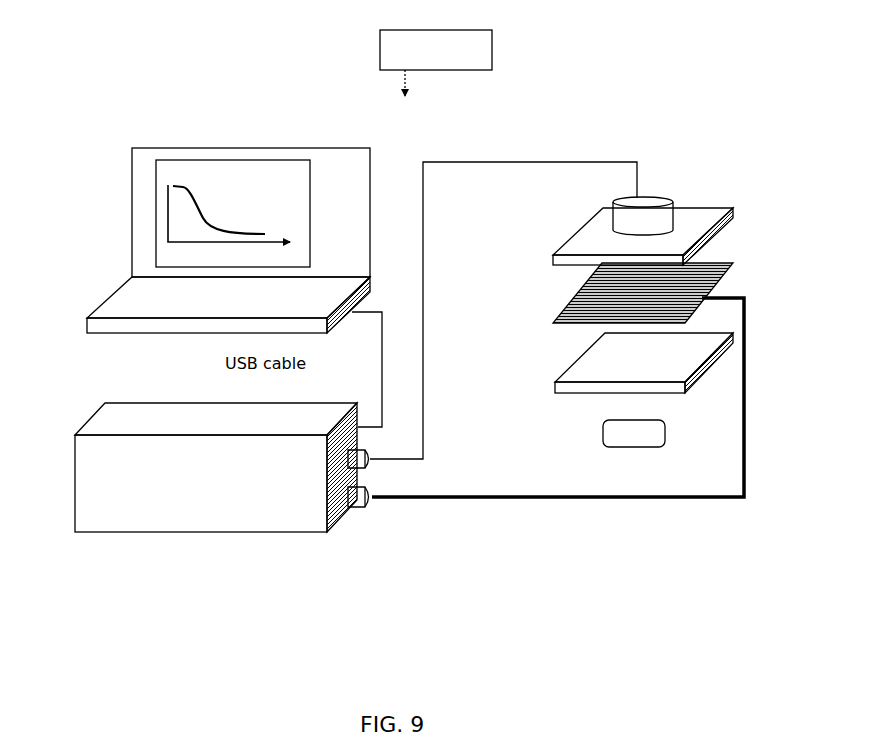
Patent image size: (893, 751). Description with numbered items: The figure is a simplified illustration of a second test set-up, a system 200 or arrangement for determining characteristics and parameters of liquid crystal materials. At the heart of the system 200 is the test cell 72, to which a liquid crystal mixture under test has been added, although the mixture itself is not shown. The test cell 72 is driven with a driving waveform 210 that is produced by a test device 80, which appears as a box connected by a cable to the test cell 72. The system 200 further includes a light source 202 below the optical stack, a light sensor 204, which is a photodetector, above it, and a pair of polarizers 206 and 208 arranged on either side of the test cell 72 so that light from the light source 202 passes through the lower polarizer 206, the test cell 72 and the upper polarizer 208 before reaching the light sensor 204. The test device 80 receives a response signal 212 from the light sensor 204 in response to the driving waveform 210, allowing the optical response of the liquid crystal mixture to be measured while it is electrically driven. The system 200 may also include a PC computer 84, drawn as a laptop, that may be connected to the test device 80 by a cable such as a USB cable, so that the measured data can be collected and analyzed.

The system 200 is at (436, 63).
The PC computer 84 is at (120, 234).
The test device 80 is at (257, 505).
The response signal 212 is at (422, 216).
The driving waveform 210 is at (622, 498).
The light sensor 204 is at (643, 212).
The polarizer 208 is at (708, 216).
The test cell 72 is at (738, 255).
The polarizer 206 is at (668, 387).
The light source 202 is at (665, 442).